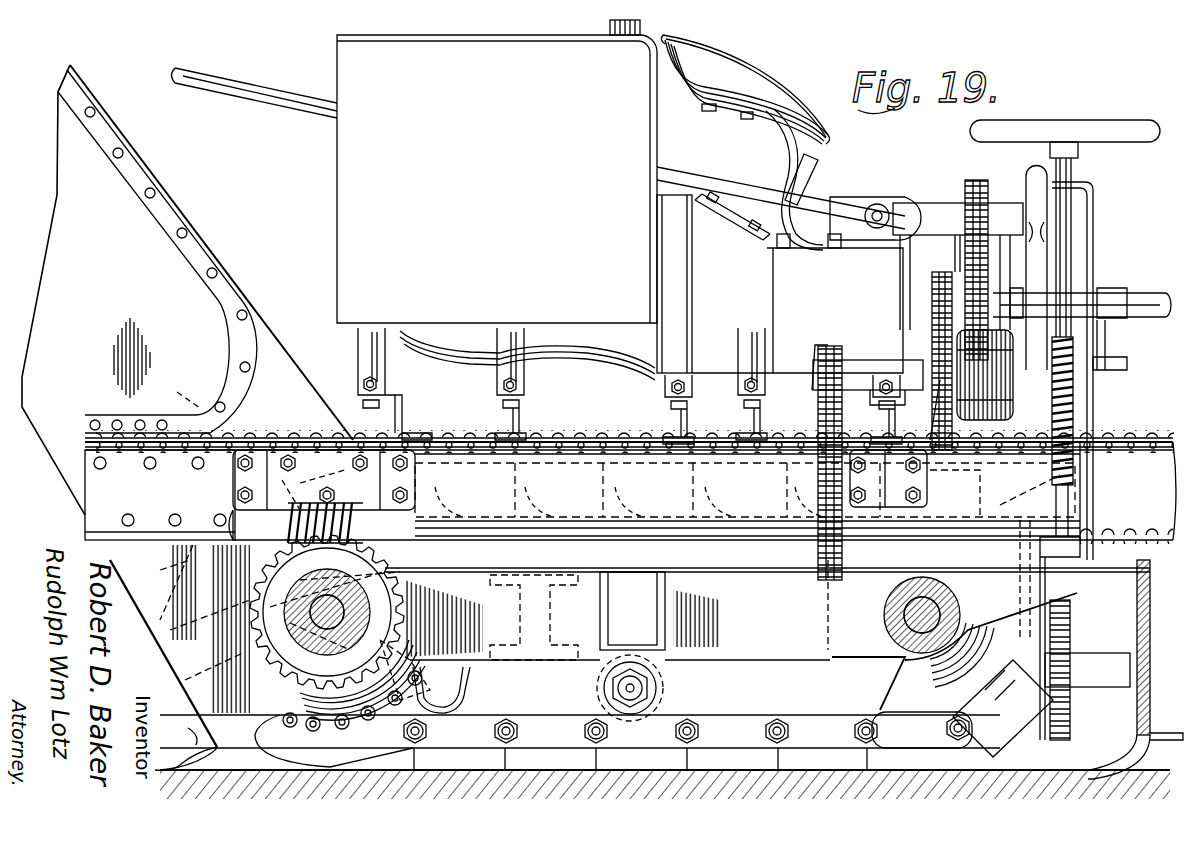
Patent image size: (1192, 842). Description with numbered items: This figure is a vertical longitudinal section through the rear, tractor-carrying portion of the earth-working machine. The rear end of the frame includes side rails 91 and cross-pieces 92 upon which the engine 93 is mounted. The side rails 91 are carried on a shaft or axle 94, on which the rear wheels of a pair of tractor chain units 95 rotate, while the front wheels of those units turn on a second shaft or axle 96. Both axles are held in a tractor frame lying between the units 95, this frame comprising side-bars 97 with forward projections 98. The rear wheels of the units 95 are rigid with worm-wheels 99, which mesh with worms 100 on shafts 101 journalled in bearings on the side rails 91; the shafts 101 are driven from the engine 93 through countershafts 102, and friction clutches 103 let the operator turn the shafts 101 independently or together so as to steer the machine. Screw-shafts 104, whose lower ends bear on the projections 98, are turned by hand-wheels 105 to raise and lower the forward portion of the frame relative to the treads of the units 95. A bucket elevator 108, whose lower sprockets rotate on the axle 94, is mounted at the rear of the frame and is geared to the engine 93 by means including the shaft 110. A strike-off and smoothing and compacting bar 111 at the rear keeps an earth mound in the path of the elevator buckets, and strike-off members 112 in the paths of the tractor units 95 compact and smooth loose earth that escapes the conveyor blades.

The side rails 91 is at (587, 443).
The cross-pieces 92 is at (500, 411).
The engine 93 is at (340, 276).
The shaft or axle 94 is at (292, 602).
The tractor chain units 95 is at (536, 728).
The shaft or axle 96 is at (884, 606).
The side-bars 97 is at (690, 658).
The forward projections 98 is at (1004, 618).
The worm-wheels 99 is at (400, 618).
The worms 100 is at (322, 496).
The shafts 101 is at (664, 528).
The countershafts 102 is at (812, 382).
The friction clutches 103 is at (968, 424).
The screw-shafts 104 is at (1073, 462).
The hand-wheels 105 is at (1143, 140).
The bucket elevator 108 is at (56, 88).
The shaft 110 is at (300, 81).
The strike-off and smoothing and compacting bar 111 is at (199, 767).
The strike-off members 112 is at (1130, 742).